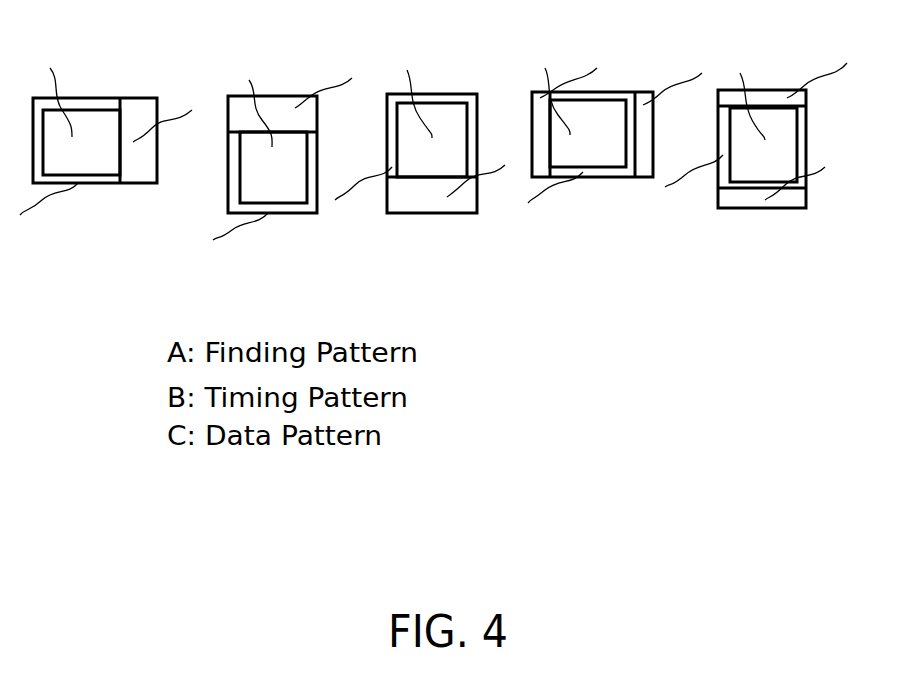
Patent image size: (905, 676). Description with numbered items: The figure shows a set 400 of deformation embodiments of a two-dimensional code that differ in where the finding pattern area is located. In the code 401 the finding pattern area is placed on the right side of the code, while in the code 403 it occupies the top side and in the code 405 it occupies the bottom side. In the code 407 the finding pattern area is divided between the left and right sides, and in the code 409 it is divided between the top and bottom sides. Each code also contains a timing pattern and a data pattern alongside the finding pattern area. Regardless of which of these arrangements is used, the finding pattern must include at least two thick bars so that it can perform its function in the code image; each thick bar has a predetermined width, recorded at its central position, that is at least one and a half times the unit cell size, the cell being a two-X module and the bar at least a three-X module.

The set of two-dimensional code pattern layouts 400 is at (777, 388).
The code 401 is at (92, 98).
The code 403 is at (268, 96).
The code 405 is at (427, 93).
The code 407 is at (598, 92).
The code 409 is at (760, 88).